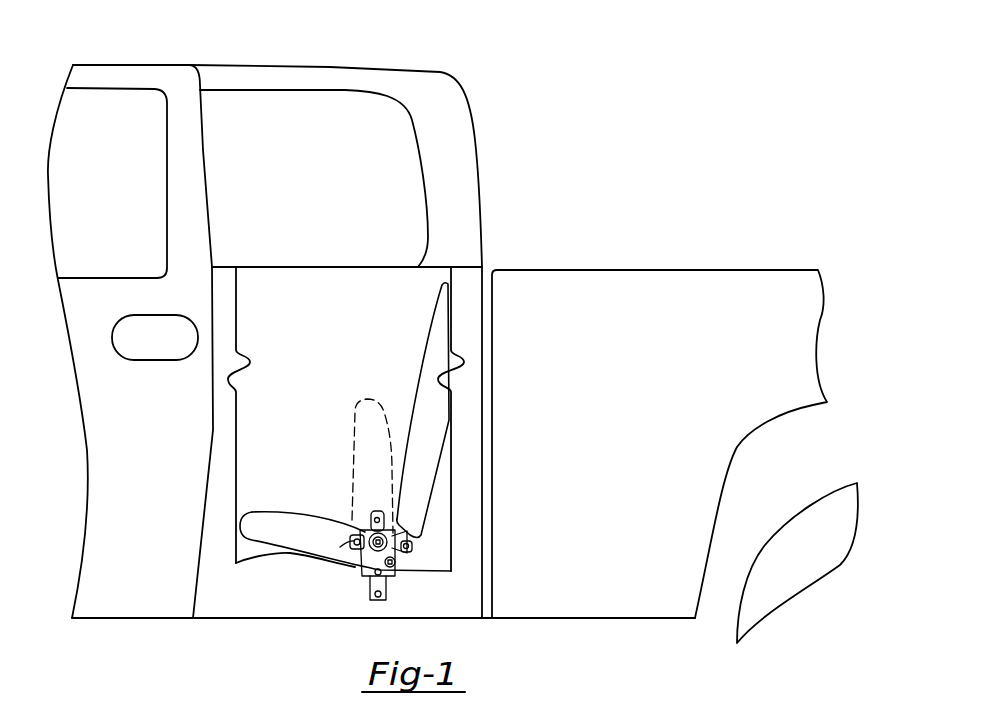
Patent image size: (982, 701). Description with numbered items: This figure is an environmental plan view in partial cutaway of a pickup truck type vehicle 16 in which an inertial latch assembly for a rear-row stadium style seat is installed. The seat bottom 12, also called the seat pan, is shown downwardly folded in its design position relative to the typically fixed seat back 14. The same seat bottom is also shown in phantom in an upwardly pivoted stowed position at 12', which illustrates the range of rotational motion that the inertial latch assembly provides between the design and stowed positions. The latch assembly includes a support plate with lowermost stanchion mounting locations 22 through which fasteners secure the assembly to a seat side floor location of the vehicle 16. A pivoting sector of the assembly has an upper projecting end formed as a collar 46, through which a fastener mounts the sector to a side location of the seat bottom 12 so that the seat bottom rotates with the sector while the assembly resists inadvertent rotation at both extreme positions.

The seat bottom 12 is at (345, 515).
The seat bottom in upwardly pivoted phantom position 12' is at (367, 440).
The seat back 14 is at (438, 312).
The pickup truck type vehicle 16 is at (664, 322).
The stanchion mounting locations 22 is at (387, 601).
The collar 46 is at (353, 542).